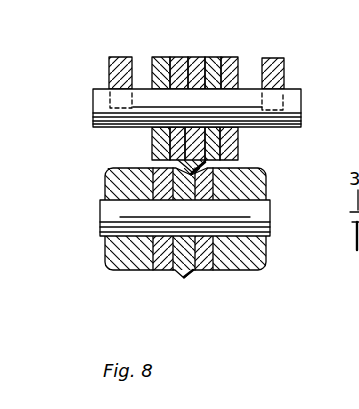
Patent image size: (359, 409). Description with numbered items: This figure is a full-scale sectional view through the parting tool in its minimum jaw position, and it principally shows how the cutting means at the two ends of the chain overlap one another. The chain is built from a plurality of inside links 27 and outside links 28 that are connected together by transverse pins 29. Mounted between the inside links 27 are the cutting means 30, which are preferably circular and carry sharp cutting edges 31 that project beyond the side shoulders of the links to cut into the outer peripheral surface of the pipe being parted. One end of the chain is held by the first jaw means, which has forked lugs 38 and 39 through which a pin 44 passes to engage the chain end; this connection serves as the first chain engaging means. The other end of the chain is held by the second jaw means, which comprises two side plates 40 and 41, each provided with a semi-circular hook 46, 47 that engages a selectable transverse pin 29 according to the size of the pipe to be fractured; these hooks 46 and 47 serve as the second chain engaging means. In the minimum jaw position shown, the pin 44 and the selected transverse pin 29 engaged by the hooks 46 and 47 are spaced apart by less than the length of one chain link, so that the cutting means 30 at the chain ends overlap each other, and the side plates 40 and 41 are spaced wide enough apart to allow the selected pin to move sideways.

The inside links 27 is at (173, 57).
The outside links 28 is at (158, 57).
The transverse pins 29 is at (302, 110).
The cutting means 30 is at (222, 30).
The cutting edges 31 is at (195, 56).
The forked lug 38 is at (262, 268).
The forked lug 39 is at (108, 258).
The side plate 40 is at (121, 70).
The side plate 41 is at (276, 71).
The pin 44 is at (272, 220).
The semi-circular hook 46 is at (119, 98).
The semi-circular hook 47 is at (275, 102).